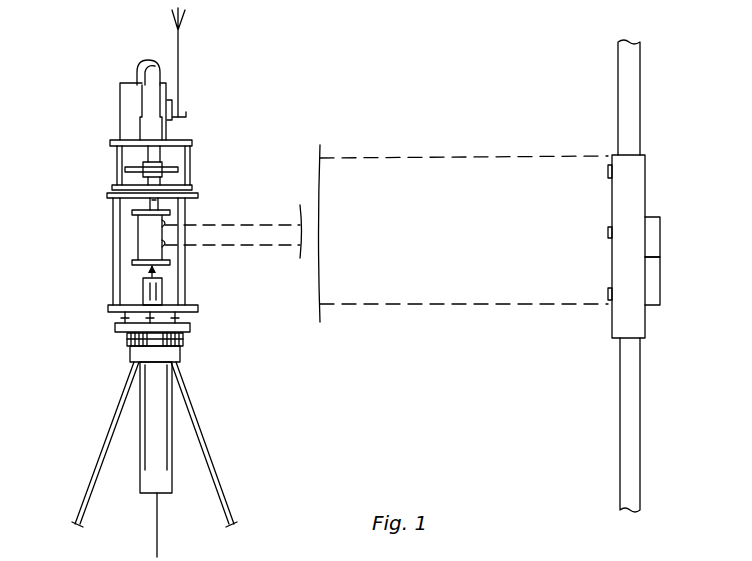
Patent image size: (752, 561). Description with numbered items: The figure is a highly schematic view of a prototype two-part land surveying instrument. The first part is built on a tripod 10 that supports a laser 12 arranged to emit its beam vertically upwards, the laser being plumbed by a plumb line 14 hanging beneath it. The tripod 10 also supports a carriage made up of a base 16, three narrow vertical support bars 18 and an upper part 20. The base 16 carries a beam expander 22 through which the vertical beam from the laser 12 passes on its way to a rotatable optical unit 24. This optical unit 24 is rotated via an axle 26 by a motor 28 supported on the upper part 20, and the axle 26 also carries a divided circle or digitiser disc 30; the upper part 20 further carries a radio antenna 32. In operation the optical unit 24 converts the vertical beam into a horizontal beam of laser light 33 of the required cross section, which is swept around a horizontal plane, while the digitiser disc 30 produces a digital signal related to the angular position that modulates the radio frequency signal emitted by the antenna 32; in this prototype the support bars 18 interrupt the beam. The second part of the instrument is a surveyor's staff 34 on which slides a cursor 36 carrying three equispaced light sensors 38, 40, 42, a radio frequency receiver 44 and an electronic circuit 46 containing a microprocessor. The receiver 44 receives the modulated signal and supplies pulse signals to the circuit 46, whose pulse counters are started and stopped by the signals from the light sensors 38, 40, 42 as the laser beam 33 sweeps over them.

The tripod 10 is at (110, 426).
The laser 12 is at (158, 420).
The plumb line 14 is at (160, 535).
The base 16 is at (198, 307).
The support bars 18 is at (117, 259).
The upper part 20 is at (122, 100).
The beam expander 22 is at (150, 295).
The rotatable optical unit 24 is at (134, 230).
The axle 26 is at (178, 210).
The motor 28 is at (158, 78).
The digitiser disc 30 is at (170, 166).
The radio antenna 32 is at (182, 48).
The horizontal beam of laser light 33 is at (275, 248).
The surveyor's staff 34 is at (628, 397).
The cursor 36 is at (638, 186).
The light sensor 38 is at (607, 172).
The light sensor 40 is at (607, 232).
The light sensor 42 is at (607, 293).
The radio frequency receiver 44 is at (661, 228).
The electronic circuit 46 is at (661, 282).